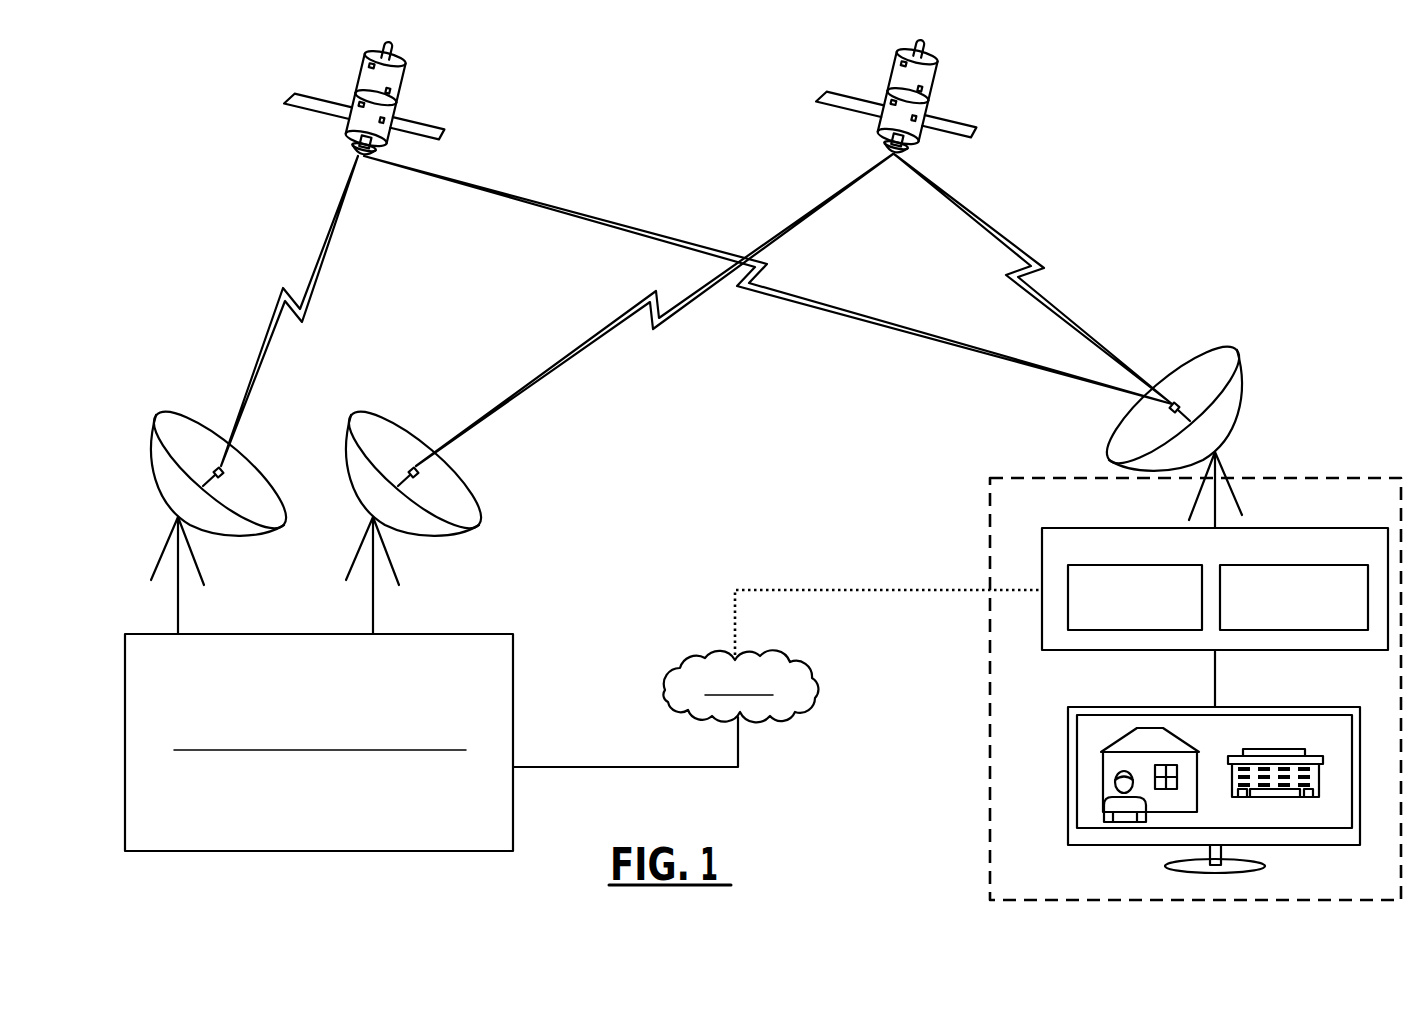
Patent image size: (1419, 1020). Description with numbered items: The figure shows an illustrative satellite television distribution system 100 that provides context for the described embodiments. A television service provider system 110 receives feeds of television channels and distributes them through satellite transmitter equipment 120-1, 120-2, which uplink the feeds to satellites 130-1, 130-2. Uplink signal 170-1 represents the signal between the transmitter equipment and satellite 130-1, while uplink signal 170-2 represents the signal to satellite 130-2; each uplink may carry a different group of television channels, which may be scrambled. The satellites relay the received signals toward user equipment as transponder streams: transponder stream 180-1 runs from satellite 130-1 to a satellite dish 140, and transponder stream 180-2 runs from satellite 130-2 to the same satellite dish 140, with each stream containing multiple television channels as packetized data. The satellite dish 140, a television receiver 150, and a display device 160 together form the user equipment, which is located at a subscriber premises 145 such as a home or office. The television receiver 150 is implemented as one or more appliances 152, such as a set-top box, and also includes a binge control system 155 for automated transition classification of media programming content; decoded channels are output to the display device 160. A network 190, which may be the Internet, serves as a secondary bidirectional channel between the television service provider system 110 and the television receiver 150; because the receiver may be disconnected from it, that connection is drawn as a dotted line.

The satellite television distribution system 100 is at (221, 136).
The television service provider system 110 is at (484, 633).
The satellite transmitter equipment 120-1 is at (168, 418).
The satellite transmitter equipment 120-2 is at (366, 417).
The satellite 130-1 is at (289, 96).
The satellite 130-2 is at (823, 94).
The satellite dish 140 is at (1218, 355).
The subscriber premises 145 is at (1043, 477).
The television receiver 150 is at (1116, 556).
The appliances 152 is at (1083, 595).
The binge control system 155 is at (1237, 595).
The display device 160 is at (1322, 706).
The uplink signal 170-1 is at (318, 247).
The uplink signal 170-2 is at (808, 220).
The transponder stream 180-1 is at (540, 200).
The transponder stream 180-2 is at (991, 230).
The network 190 is at (672, 664).